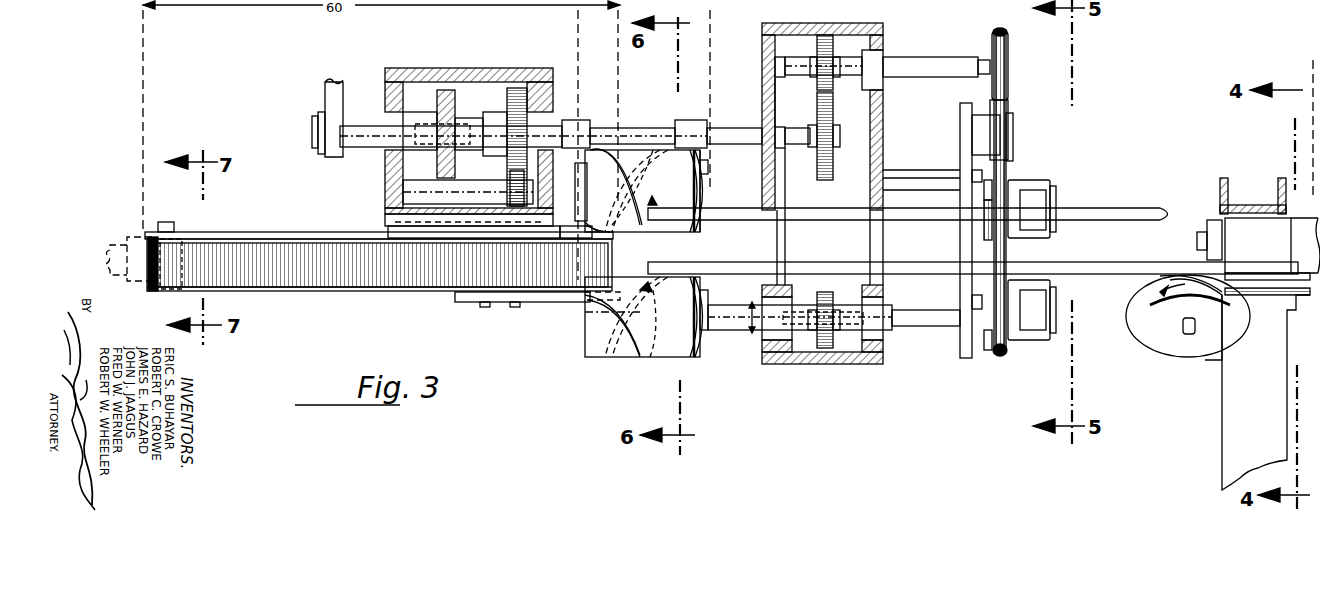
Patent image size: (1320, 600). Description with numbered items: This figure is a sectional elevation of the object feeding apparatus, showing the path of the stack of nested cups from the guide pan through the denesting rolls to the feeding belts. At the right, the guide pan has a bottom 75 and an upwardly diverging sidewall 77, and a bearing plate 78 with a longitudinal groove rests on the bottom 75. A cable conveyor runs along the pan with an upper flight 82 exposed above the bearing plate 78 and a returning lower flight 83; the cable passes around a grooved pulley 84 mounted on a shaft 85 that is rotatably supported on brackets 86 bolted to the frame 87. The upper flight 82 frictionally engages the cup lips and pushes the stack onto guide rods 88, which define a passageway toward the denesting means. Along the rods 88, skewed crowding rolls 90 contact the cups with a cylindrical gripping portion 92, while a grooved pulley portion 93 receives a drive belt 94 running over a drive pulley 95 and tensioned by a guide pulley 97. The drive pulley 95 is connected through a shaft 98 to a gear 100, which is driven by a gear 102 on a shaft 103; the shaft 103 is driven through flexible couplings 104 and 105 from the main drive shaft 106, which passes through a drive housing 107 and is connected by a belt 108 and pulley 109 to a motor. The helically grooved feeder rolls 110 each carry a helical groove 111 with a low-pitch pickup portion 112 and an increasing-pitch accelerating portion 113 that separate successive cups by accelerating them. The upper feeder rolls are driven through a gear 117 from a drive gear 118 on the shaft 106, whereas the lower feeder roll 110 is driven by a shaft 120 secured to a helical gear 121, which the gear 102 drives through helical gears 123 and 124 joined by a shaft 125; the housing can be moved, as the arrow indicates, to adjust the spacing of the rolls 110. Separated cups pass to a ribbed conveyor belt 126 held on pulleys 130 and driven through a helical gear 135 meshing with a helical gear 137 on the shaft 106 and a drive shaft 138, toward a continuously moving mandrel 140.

The bottom 75 is at (1268, 298).
The sidewall 77 is at (1298, 230).
The bearing plate 78 is at (1296, 310).
The upper flight 82 is at (1272, 244).
The lower flight 83 is at (1215, 360).
The grooved pulley 84 is at (1155, 330).
The shaft 85 is at (1186, 330).
The bracket 86 is at (1205, 258).
The frame 87 is at (1222, 195).
The guide rods 88 is at (1112, 220).
The crowding rolls 90 is at (1028, 182).
The cylindrical gripping portion 92 is at (1040, 193).
The grooved pulley portion 93 is at (1000, 186).
The drive belt 94 is at (1000, 30).
The drive pulley 95 is at (992, 48).
The guide pulley 97 is at (1012, 118).
The shaft 98 is at (904, 58).
The gear 100 is at (820, 38).
The gear 102 is at (826, 112).
The shaft 103 is at (737, 134).
The flexible coupling 104 is at (585, 125).
The flexible coupling 105 is at (693, 125).
The main drive shaft 106 is at (362, 128).
The drive housing 107 is at (398, 72).
The belt 108 is at (330, 96).
The pulley 109 is at (314, 152).
The feeder roll 110 is at (660, 203).
The helical groove 111 is at (648, 150).
The pickup portion 112 is at (700, 172).
The accelerating portion 113 is at (620, 200).
The gear 117 is at (512, 190).
The drive gear 118 is at (515, 90).
The shaft 120 is at (738, 318).
The helical gear 121 is at (824, 350).
The helical gear 123 is at (850, 60).
The helical gear 124 is at (855, 360).
The shaft 125 is at (828, 200).
The conveyor belt 126 is at (338, 290).
The pulleys 130 is at (172, 236).
The helical gear 135 is at (418, 130).
The helical gear 137 is at (446, 90).
The drive shaft 138 is at (430, 78).
The mandrel 140 is at (150, 232).